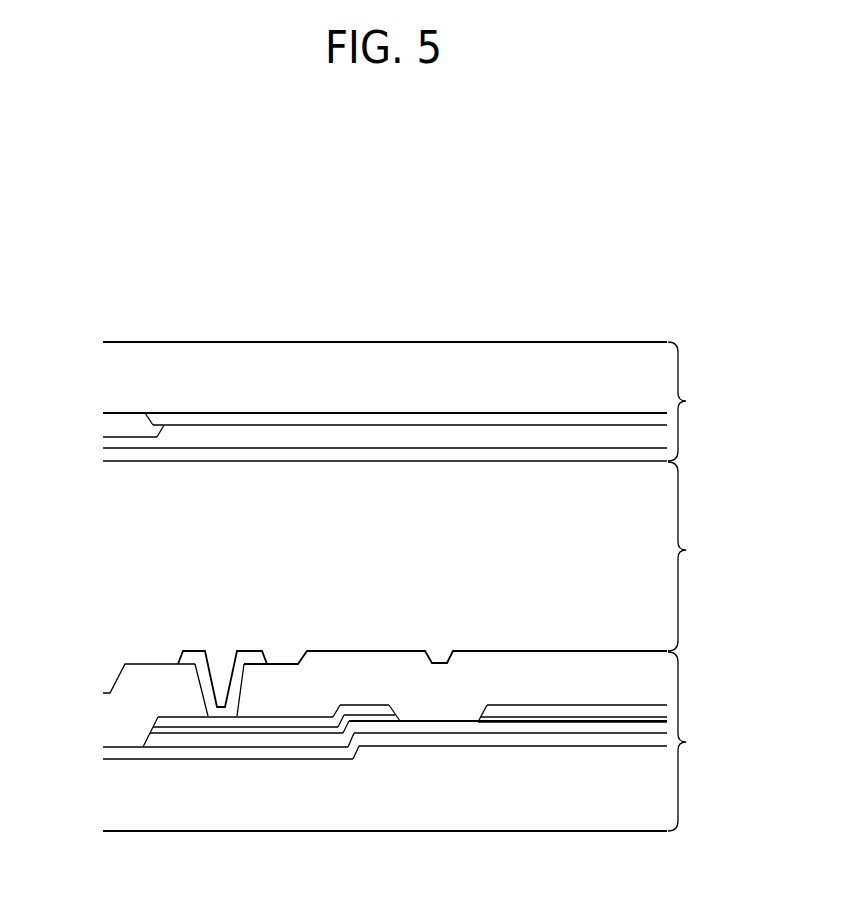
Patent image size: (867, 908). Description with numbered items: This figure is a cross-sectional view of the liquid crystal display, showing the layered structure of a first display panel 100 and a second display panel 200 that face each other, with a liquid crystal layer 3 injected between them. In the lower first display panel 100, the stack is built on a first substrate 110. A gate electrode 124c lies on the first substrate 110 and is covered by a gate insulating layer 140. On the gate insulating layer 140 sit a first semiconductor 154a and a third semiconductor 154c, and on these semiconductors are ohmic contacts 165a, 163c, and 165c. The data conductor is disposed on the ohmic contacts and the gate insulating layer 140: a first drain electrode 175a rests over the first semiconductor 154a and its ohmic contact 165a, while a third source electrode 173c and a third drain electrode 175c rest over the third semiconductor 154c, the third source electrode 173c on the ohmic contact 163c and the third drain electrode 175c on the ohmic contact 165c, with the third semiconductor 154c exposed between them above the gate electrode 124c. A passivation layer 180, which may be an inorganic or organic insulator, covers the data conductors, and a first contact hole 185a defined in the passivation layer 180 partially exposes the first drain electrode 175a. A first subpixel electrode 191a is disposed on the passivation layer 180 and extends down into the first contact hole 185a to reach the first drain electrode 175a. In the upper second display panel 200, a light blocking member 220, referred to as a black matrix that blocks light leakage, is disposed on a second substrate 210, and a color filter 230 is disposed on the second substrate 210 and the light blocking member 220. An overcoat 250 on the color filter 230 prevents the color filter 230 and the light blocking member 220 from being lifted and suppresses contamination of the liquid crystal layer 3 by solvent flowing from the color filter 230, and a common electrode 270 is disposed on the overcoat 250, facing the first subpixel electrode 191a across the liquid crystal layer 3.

The liquid crystal layer 3 is at (687, 556).
The first display panel 100 is at (696, 741).
The first substrate 110 is at (612, 805).
The gate electrode 124c is at (436, 752).
The gate insulating layer 140 is at (312, 750).
The first semiconductor 154a is at (169, 740).
The third semiconductor 154c is at (490, 727).
The ohmic contact 163c is at (555, 718).
The ohmic contact 165a is at (235, 733).
The ohmic contact 165c is at (372, 718).
The third source electrode 173c is at (578, 712).
The first drain electrode 175a is at (170, 723).
The third drain electrode 175c is at (363, 710).
The passivation layer 180 is at (510, 672).
The first contact hole 185a is at (203, 685).
The first subpixel electrode 191a is at (252, 657).
The second display panel 200 is at (696, 401).
The second substrate 210 is at (540, 372).
The light blocking member 220 is at (453, 418).
The color filter 230 is at (124, 422).
The overcoat 250 is at (243, 440).
The common electrode 270 is at (356, 455).